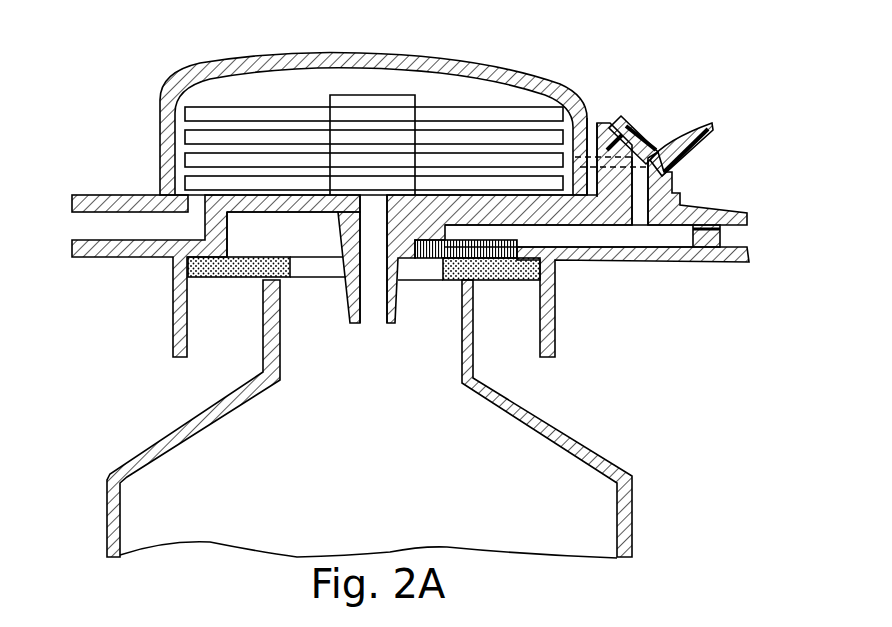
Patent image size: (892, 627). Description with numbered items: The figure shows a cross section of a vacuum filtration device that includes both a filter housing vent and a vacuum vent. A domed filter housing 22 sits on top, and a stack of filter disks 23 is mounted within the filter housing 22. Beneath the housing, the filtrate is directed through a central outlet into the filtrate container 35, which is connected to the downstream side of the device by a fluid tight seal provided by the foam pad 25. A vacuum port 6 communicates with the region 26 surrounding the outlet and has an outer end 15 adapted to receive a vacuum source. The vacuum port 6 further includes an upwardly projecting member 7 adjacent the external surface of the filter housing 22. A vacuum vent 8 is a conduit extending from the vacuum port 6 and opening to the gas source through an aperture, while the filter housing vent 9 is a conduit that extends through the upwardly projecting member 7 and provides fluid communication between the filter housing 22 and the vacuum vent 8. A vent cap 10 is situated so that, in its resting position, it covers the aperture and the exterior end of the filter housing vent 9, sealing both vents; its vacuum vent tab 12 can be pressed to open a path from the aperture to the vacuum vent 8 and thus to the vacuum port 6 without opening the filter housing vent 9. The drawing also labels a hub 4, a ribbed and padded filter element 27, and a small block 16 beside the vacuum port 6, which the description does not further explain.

The filter housing 22 is at (336, 54).
The filter disks 23 is at (183, 182).
The filter housing vent 9 is at (575, 150).
The vent cap 10 is at (617, 118).
The upwardly projecting member 7 is at (638, 137).
The vacuum vent tab 12 is at (716, 126).
The vacuum vent 8 is at (640, 222).
The vacuum port 6 is at (586, 240).
The seal block 16 is at (722, 230).
The outer end 15 is at (747, 262).
The filter element 27 is at (424, 260).
The hub 4 is at (350, 303).
The region surrounding outlet 26 is at (328, 258).
The foam pad 25 is at (240, 278).
The filtrate container 35 is at (587, 445).